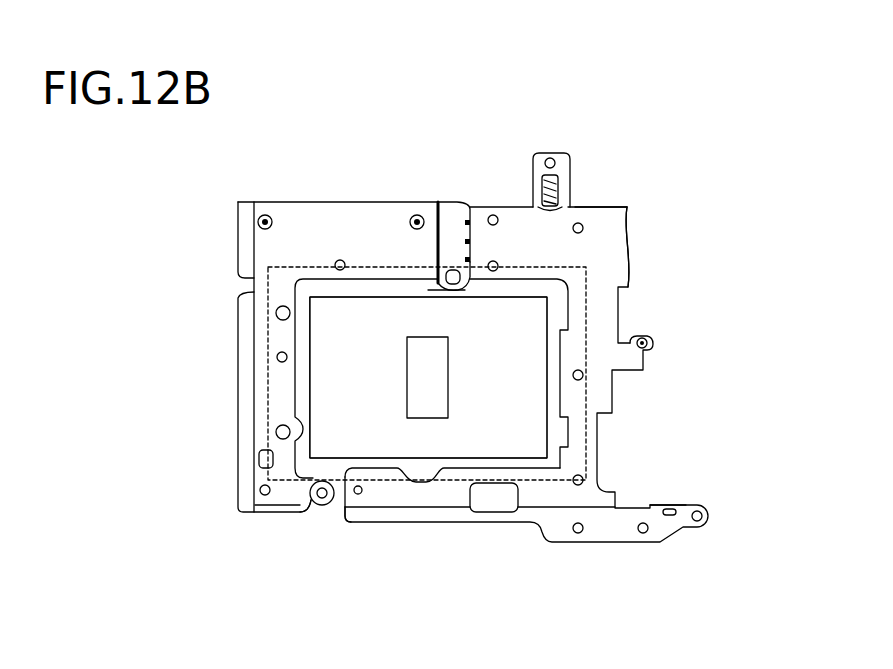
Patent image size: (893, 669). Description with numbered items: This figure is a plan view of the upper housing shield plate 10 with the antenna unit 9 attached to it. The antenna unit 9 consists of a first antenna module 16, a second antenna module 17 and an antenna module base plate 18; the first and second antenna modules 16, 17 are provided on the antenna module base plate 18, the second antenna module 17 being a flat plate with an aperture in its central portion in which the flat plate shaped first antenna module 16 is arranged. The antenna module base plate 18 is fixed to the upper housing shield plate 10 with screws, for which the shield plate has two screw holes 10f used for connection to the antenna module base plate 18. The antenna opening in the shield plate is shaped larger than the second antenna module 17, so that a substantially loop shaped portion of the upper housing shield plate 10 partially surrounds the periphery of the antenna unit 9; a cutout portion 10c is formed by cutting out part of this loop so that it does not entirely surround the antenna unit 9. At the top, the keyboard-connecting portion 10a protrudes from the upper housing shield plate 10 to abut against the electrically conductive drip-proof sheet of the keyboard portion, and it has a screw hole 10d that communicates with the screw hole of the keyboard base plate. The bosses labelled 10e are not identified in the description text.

The upper housing shield plate 10 is at (468, 94).
The keyboard-connecting portion 10a is at (569, 176).
The cutout portion 10c is at (335, 526).
The screw hole 10d is at (550, 157).
The boss / mounting hole 10e is at (320, 503).
The screw holes 10f is at (276, 312).
The antenna unit 9 is at (382, 323).
The first antenna module 16 is at (415, 377).
The second antenna module 17 is at (333, 347).
The antenna module base plate 18 is at (277, 395).